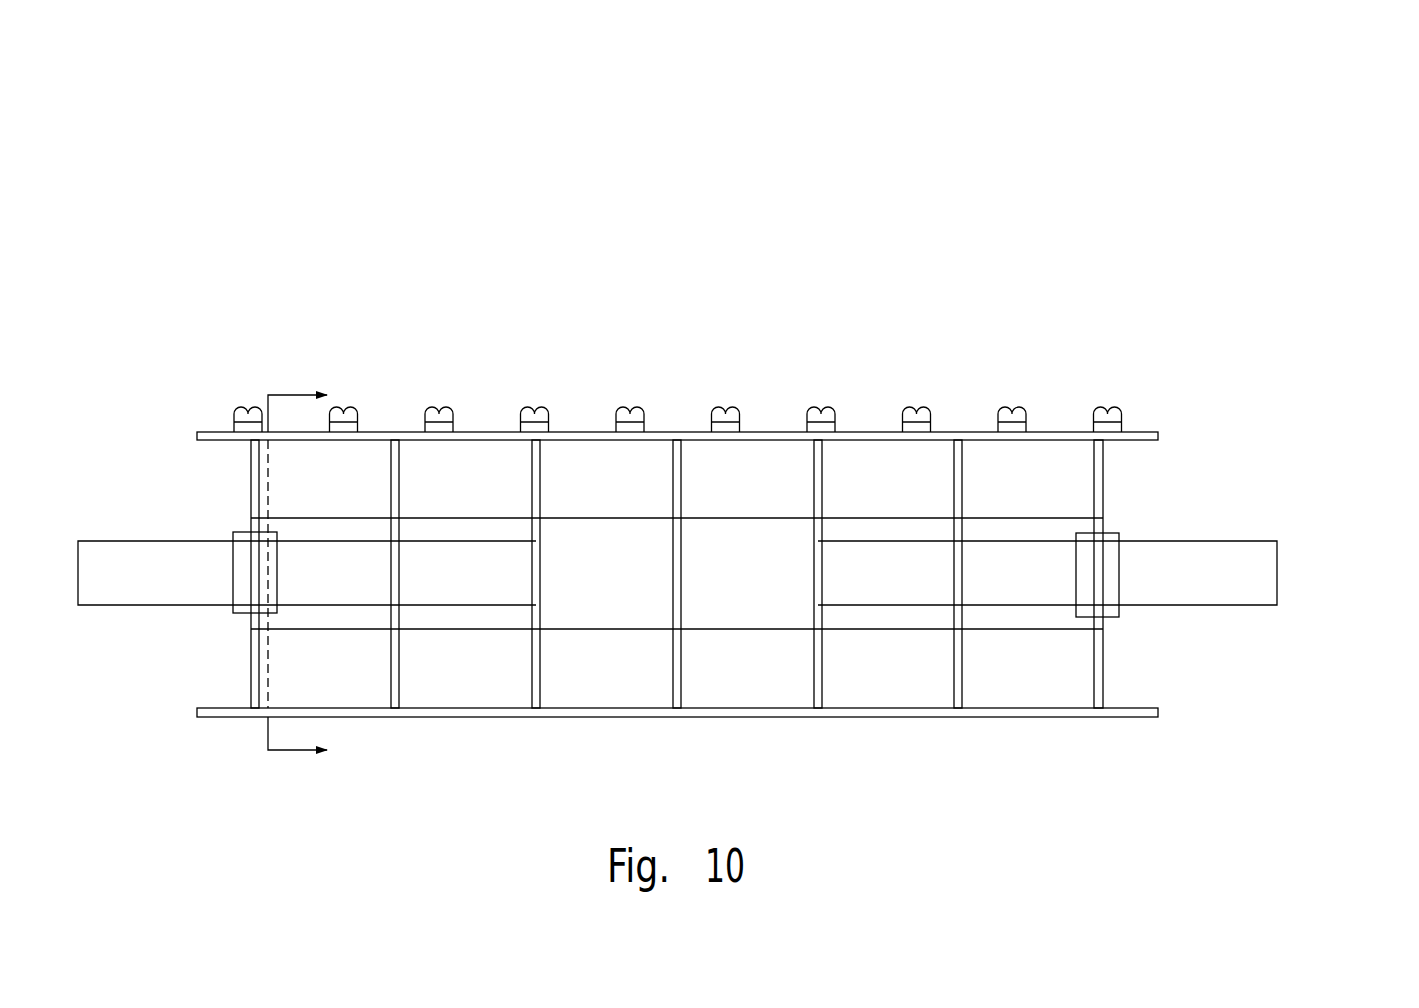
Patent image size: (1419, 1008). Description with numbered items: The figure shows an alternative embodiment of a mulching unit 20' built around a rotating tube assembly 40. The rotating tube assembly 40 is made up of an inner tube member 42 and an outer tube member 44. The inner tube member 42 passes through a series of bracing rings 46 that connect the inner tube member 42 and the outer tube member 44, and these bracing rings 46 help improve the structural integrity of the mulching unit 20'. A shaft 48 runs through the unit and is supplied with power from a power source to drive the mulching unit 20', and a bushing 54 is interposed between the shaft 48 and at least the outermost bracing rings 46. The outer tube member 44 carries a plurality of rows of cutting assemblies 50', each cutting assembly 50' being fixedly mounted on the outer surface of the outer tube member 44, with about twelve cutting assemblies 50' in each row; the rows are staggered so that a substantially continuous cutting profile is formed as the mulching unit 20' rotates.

The mulching unit 20' is at (742, 439).
The rotating tube assembly 40 is at (805, 192).
The inner tube member 42 is at (753, 558).
The outer tube member 44 is at (675, 428).
The bracing rings 46 is at (400, 560).
The shaft 48 is at (1297, 575).
The cutting assemblies 50' is at (678, 362).
The bushing 54 is at (243, 612).